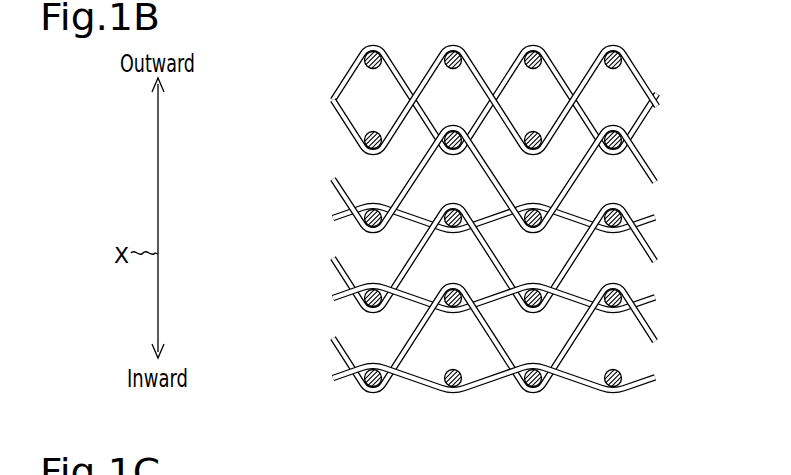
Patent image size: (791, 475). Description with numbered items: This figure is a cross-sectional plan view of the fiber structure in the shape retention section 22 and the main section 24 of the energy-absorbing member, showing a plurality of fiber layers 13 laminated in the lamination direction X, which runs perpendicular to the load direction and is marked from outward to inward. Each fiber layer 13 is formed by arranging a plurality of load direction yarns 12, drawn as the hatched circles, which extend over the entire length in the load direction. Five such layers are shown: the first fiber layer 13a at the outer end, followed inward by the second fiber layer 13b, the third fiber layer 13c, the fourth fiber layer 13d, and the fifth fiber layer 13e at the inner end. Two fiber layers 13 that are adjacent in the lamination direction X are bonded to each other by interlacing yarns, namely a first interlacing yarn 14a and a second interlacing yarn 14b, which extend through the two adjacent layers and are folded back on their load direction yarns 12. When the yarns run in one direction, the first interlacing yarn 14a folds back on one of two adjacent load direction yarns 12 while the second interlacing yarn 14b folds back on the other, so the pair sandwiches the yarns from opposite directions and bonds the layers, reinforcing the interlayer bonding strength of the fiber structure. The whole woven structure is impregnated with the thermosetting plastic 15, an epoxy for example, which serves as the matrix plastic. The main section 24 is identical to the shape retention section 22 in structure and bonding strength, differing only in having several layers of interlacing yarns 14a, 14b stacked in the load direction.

The load direction yarn 12 is at (621, 55).
The fiber layer 13 is at (446, 243).
The first fiber layer 13a is at (292, 64).
The second fiber layer 13b is at (292, 144).
The third fiber layer 13c is at (292, 224).
The fourth fiber layer 13d is at (292, 304).
The fifth fiber layer 13e is at (292, 384).
The first interlacing yarn 14a is at (446, 43).
The second interlacing yarn 14b is at (332, 78).
The thermosetting plastic 15 is at (470, 192).
The shape retention section 22 is at (494, 420).
The main section 24 is at (494, 378).